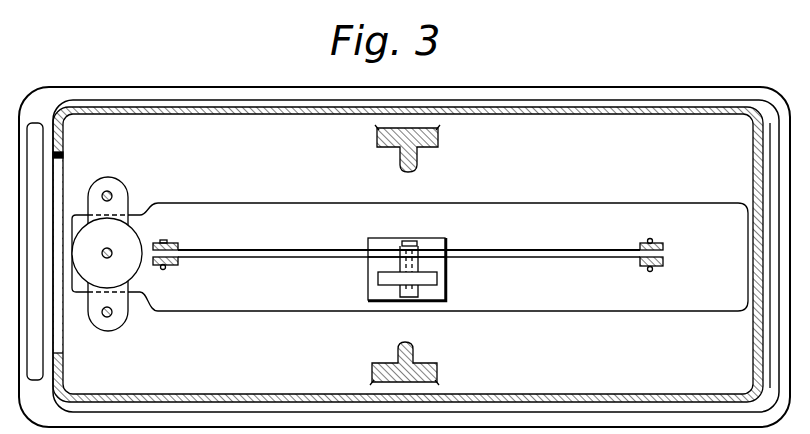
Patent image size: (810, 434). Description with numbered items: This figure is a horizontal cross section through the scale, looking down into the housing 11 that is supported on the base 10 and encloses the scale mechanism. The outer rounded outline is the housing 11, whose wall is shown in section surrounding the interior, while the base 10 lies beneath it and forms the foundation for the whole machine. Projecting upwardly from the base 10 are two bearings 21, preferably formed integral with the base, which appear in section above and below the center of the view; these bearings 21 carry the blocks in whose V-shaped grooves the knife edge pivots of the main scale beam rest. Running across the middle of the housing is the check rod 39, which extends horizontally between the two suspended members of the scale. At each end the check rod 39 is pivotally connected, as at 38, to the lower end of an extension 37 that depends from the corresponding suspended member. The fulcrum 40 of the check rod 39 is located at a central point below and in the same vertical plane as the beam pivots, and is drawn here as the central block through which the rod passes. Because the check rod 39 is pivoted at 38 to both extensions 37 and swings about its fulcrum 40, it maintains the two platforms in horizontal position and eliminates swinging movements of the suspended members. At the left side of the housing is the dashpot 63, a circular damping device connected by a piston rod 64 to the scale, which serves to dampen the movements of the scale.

The base 10 is at (167, 88).
The housing 11 is at (542, 107).
The bearings 21 is at (380, 135).
The extension 37 is at (170, 243).
The pivotal connection 38 is at (162, 268).
The check rod 39 is at (304, 250).
The fulcrum 40 is at (412, 242).
The dashpot 63 is at (115, 237).
The piston rod 64 is at (110, 257).